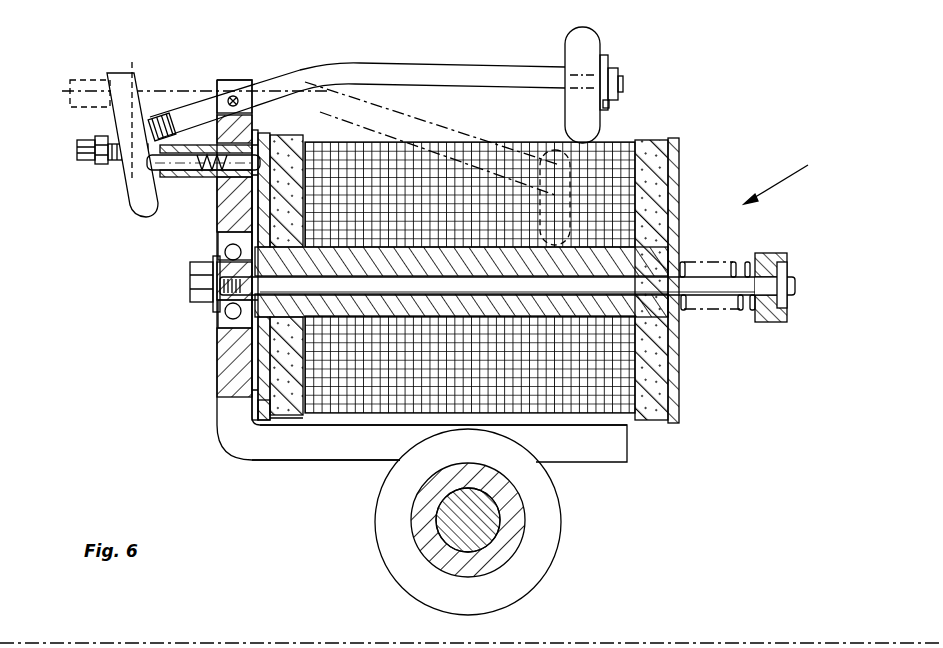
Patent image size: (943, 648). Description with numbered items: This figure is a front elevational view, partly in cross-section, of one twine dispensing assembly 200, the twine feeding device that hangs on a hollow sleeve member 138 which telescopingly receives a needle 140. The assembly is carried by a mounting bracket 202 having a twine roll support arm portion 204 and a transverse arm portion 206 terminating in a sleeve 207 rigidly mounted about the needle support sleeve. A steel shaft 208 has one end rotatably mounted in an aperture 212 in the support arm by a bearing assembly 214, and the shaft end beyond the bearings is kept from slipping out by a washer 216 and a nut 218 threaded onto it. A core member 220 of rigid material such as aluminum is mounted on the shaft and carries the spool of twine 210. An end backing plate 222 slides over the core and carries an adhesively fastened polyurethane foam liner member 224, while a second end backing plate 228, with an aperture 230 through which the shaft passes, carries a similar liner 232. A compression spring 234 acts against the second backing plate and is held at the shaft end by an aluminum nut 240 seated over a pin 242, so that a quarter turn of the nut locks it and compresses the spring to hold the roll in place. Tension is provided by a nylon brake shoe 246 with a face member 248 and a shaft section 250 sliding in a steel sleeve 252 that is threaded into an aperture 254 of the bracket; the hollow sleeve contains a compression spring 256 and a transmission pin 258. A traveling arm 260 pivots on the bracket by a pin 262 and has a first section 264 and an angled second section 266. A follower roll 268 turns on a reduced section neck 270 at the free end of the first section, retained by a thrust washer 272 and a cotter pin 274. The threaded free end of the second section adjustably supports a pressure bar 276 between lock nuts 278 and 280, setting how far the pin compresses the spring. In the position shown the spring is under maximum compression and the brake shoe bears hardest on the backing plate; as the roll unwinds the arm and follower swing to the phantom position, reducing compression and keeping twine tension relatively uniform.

The hollow sleeve member 138 is at (520, 538).
The needle 140 is at (485, 527).
The twine dispensing assembly 200 is at (789, 177).
The mounting bracket 202 is at (255, 470).
The twine roll support arm portion 204 is at (226, 391).
The transverse arm portion 206 is at (365, 460).
The sleeve 207 is at (525, 578).
The shaft 208 is at (710, 282).
The spool of twine 210 is at (622, 140).
The aperture 212 is at (218, 234).
The bearing assembly 214 is at (218, 324).
The washer 216 is at (214, 264).
The nut 218 is at (200, 282).
The core member 220 is at (676, 247).
The end backing plate 222 is at (268, 402).
The polyurethane foam liner member 224 is at (294, 420).
The second end backing plate 228 is at (678, 188).
The aperture 230 is at (678, 305).
The liner 232 is at (684, 141).
The compression spring 234 is at (742, 308).
The nut 240 is at (774, 254).
The pin 242 is at (783, 270).
The brake shoe 246 is at (262, 160).
The face member 248 is at (284, 160).
The shaft section 250 is at (268, 128).
The sleeve 252 is at (183, 150).
The aperture 254 is at (227, 180).
The compression spring 256 is at (212, 173).
The transmission pin 258 is at (130, 177).
The traveling arm 260 is at (412, 72).
The pin 262 is at (237, 97).
The first section 264 is at (493, 73).
The second section 266 is at (207, 103).
The follower roll 268 is at (592, 40).
The reduced section neck 270 is at (588, 77).
The thrust washer 272 is at (612, 107).
The cotter pin 274 is at (613, 72).
The pressure bar 276 is at (120, 127).
The lock nut 278 is at (95, 140).
The lock nut 280 is at (152, 112).